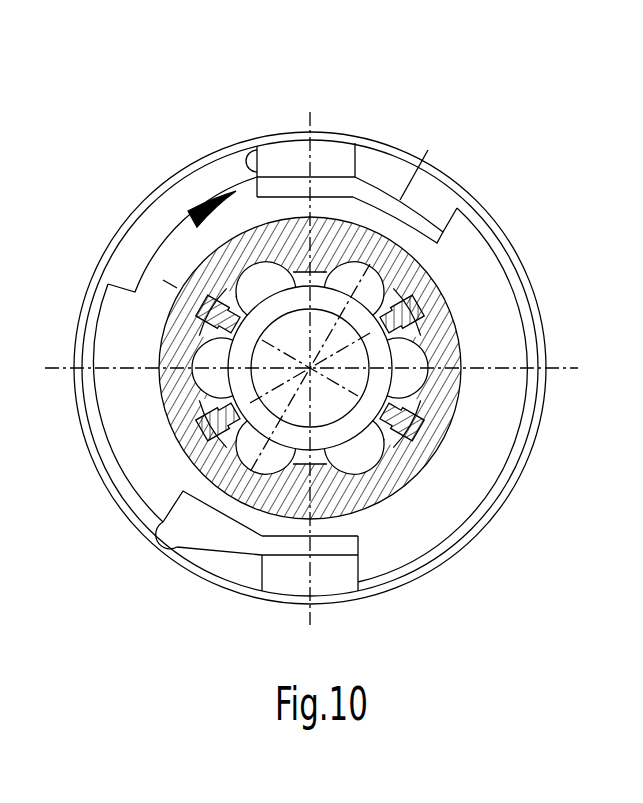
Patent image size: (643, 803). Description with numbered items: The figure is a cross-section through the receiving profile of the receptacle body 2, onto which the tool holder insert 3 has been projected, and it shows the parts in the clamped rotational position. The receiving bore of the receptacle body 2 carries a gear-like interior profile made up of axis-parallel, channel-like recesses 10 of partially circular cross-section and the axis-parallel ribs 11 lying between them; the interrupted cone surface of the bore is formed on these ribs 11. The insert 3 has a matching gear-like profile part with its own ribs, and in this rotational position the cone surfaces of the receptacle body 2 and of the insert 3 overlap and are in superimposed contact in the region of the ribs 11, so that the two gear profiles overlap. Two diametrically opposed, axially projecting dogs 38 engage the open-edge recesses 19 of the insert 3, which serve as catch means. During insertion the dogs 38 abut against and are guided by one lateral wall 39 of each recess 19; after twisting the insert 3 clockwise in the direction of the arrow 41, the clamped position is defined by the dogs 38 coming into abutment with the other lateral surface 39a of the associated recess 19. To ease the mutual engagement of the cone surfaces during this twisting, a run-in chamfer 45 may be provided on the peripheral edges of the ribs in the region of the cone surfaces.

The receptacle body 2 is at (148, 196).
The insert 3 is at (338, 410).
The channel-like recesses 10 is at (203, 375).
The axis-parallel ribs 11 is at (225, 318).
The open-edge recesses 19 is at (368, 258).
The dogs 38 is at (333, 165).
The lateral wall 39 is at (440, 242).
The other lateral surface 39a is at (240, 148).
The arrow 41 is at (185, 227).
The run-in chamfer 45 is at (293, 289).